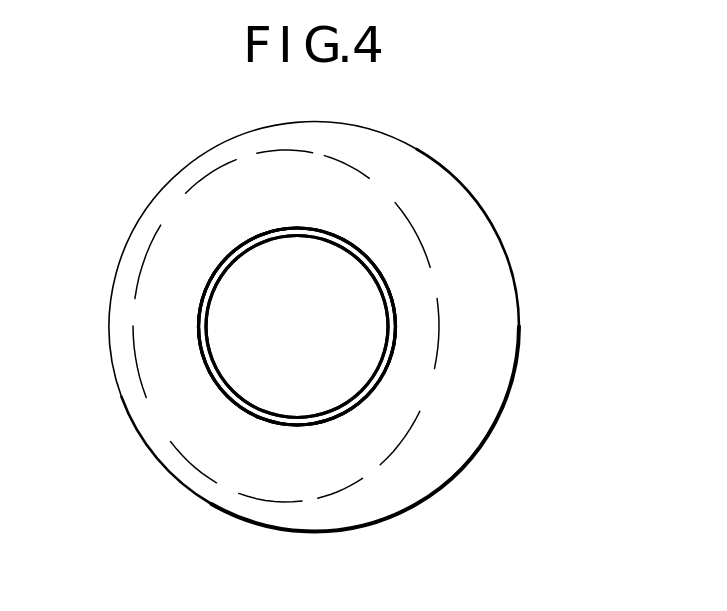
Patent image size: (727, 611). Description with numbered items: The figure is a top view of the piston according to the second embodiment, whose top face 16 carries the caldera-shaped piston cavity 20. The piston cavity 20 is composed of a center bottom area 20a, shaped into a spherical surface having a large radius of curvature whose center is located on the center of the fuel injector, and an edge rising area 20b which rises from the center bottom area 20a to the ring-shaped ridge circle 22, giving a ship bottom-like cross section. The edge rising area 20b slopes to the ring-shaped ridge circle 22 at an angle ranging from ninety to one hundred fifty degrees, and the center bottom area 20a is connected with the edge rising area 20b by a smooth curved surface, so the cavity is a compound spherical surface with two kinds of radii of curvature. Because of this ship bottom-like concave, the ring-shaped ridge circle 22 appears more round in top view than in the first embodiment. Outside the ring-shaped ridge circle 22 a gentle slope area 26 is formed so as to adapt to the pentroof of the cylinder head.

The housing body 16 is at (522, 290).
The piston cavity 20 is at (243, 351).
The center bottom area 20a is at (293, 320).
The edge rising area 20b is at (226, 310).
The ring-shaped ridge circle 22 is at (372, 257).
The gentle slope area 26 is at (408, 280).